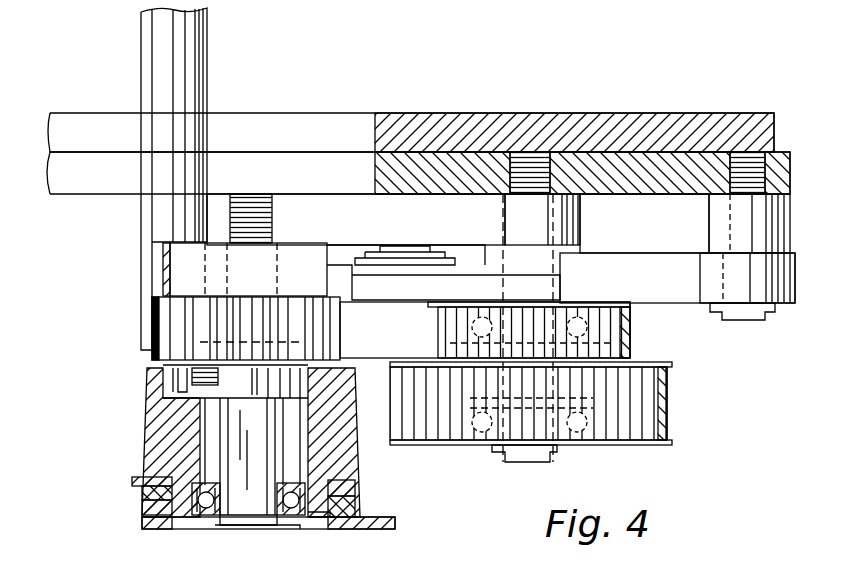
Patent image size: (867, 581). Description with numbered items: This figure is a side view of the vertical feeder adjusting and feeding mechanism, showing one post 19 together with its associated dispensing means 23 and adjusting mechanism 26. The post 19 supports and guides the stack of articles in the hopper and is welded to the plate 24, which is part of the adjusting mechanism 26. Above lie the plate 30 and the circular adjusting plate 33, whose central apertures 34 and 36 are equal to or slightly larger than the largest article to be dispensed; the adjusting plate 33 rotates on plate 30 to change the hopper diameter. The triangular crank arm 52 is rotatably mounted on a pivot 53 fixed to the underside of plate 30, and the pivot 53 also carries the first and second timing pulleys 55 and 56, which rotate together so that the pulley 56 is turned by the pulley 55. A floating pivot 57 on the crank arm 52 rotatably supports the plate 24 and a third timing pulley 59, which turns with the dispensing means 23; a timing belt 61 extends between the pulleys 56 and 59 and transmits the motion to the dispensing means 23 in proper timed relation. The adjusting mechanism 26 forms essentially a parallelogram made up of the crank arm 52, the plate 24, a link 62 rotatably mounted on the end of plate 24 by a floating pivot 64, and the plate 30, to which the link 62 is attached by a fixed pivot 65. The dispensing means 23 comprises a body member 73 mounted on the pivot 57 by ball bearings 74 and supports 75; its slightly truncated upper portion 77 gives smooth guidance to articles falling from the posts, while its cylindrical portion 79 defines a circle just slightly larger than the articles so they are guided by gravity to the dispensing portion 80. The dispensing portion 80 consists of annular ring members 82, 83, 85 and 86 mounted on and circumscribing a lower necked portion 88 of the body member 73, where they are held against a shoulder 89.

The post 19 is at (205, 50).
The dispensing means 23 is at (248, 473).
The plate 24 is at (361, 271).
The adjusting mechanism 26 is at (694, 389).
The plate 30 is at (487, 170).
The adjusting plate 33 is at (465, 126).
The central aperture 34 is at (411, 132).
The central aperture 36 is at (418, 173).
The crank arm 52 is at (356, 219).
The pivot 53 is at (565, 205).
The first timing pulley 55 is at (650, 437).
The second timing pulley 56 is at (628, 333).
The floating pivot 57 is at (274, 215).
The third timing pulley 59 is at (165, 332).
The timing belt 61 is at (485, 330).
The link 62 is at (677, 286).
The floating pivot 64 is at (432, 247).
The fixed pivot 65 is at (760, 178).
The body member 73 is at (145, 445).
The ball bearings 74 is at (210, 507).
The supports 75 is at (198, 515).
The upper portion 77 is at (152, 387).
The cylindrical portion 79 is at (348, 458).
The dispensing portion 80 is at (121, 509).
The annular ring member 82 is at (350, 483).
The annular ring member 83 is at (350, 498).
The annular ring member 85 is at (355, 508).
The annular ring member 86 is at (380, 530).
The lower necked portion 88 is at (330, 530).
The shoulder 89 is at (140, 479).